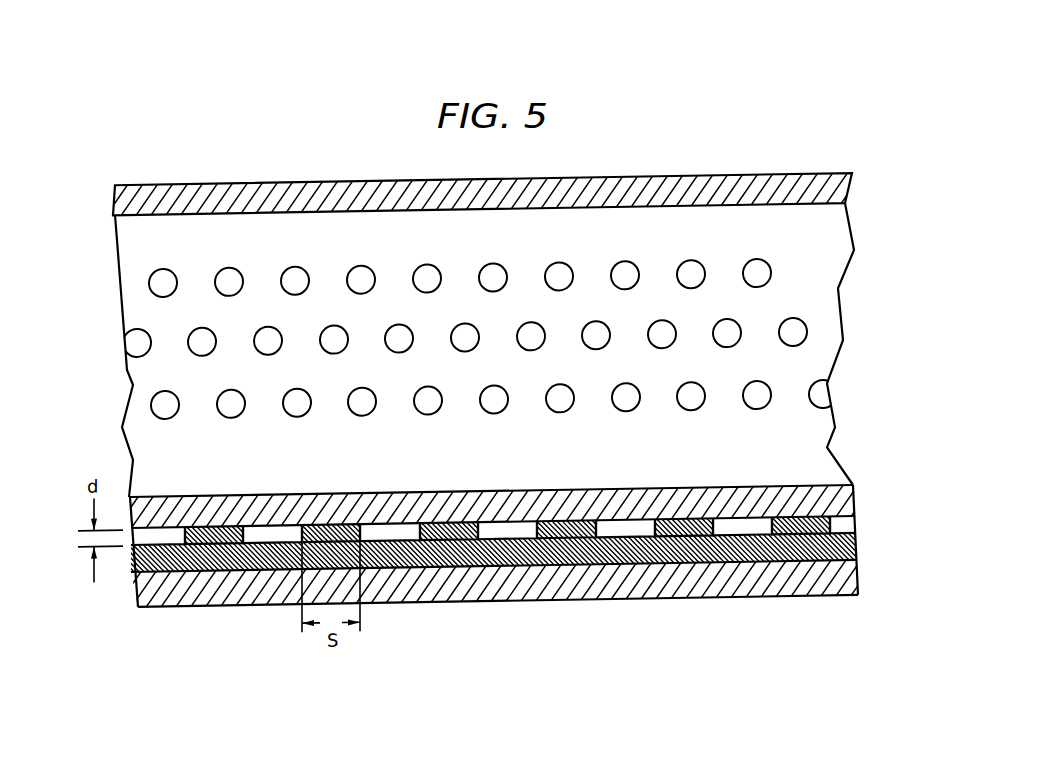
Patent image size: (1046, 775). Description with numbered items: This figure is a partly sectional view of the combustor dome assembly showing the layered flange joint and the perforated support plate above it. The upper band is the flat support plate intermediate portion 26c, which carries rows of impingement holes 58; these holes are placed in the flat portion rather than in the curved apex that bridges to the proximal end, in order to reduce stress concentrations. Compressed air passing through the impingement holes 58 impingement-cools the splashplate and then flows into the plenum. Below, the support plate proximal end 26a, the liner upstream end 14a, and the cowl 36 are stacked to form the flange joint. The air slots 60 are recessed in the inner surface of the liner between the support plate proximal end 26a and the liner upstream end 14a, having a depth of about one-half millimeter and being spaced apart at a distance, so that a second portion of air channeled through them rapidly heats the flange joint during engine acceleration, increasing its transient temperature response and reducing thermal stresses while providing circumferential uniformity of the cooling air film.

The support plate intermediate portion 26c is at (165, 248).
The impingement holes 58 is at (507, 376).
The support plate proximal end 26a is at (843, 512).
The air slots 60 is at (848, 539).
The liner upstream end 14a is at (825, 557).
The cowl 36 is at (850, 589).